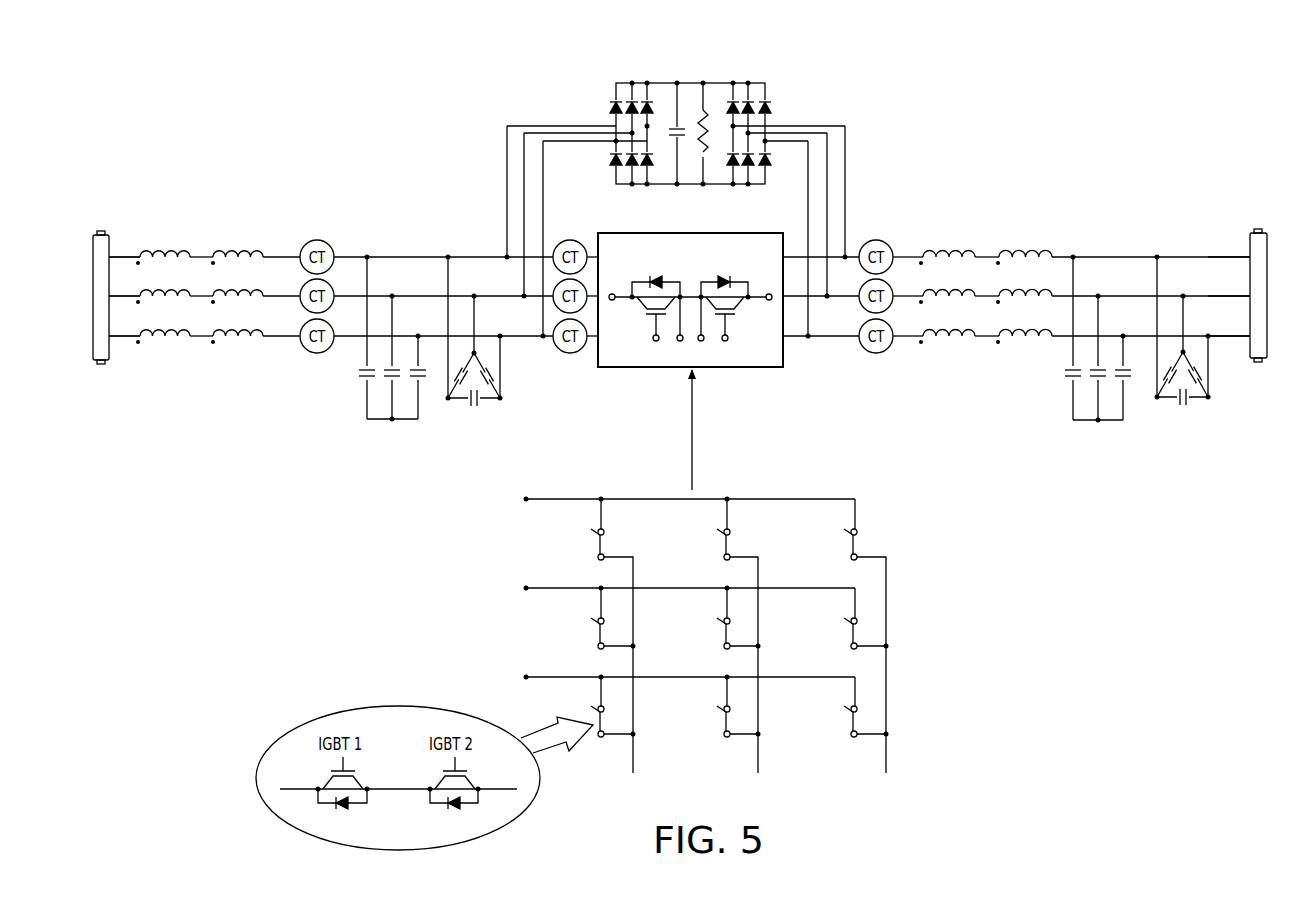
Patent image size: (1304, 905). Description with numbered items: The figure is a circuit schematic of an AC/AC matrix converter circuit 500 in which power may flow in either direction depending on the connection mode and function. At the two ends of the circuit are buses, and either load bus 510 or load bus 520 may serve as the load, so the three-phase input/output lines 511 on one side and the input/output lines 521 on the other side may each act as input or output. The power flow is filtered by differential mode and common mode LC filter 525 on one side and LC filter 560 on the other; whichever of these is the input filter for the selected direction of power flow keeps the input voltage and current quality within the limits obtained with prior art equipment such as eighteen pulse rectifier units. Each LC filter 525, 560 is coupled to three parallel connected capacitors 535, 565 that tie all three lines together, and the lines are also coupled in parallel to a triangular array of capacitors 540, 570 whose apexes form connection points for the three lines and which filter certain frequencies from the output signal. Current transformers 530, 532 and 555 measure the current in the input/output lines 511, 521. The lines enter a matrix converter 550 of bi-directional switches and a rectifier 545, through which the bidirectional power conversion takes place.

The AC/AC matrix converter circuit 500 is at (298, 102).
The load bus 510 is at (103, 365).
The input/output lines 511 is at (124, 245).
The load bus 520 is at (1260, 362).
The input/output lines 521 is at (1212, 250).
The differential mode and common mode LC filter 525 is at (185, 238).
The current transformers 530 is at (332, 238).
The current transformers 532 is at (570, 362).
The three parallel connected capacitors 535 is at (353, 417).
The triangular array of capacitors 540 is at (475, 438).
The rectifier 545 is at (738, 70).
The matrix converter 550 is at (672, 368).
The current transformers 555 is at (892, 233).
The differential mode and common mode LC filter 560 is at (978, 235).
The three parallel connected capacitors 565 is at (1058, 417).
The triangular array of capacitors 570 is at (1193, 438).